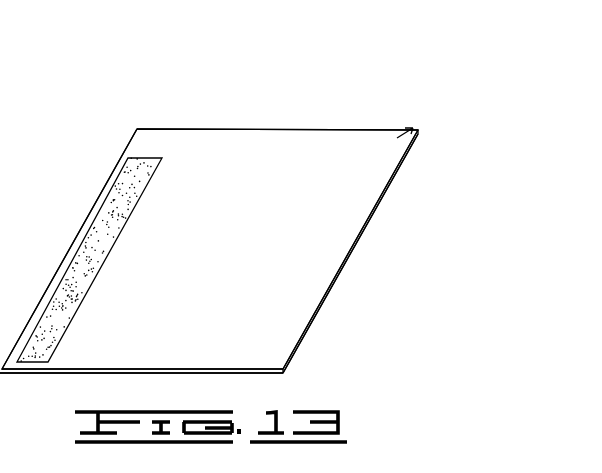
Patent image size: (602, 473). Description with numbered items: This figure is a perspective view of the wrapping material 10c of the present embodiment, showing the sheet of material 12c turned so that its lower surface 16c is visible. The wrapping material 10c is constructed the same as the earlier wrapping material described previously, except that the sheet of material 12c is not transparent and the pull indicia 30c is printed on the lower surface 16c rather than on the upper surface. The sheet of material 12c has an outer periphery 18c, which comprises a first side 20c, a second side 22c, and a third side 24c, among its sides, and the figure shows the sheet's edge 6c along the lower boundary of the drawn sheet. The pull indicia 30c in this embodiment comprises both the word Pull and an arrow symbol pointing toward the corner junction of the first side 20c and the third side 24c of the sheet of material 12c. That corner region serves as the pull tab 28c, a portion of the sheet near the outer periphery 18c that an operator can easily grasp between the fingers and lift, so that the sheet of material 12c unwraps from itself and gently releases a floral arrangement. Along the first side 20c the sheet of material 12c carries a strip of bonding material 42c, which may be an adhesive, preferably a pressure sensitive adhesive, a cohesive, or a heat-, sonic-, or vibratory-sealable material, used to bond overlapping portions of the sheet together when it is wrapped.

The wrapping material 10c is at (318, 38).
The bottom edge of sheet 6c is at (53, 373).
The sheet of material 12c is at (232, 123).
The lower surface 16c is at (210, 138).
The outer periphery 18c is at (325, 297).
The first side 20c is at (113, 170).
The second side 22c is at (360, 233).
The third side 24c is at (285, 128).
The pull tab 28c is at (402, 127).
The pull indicia 30c is at (377, 128).
The bonding material 42c is at (103, 227).